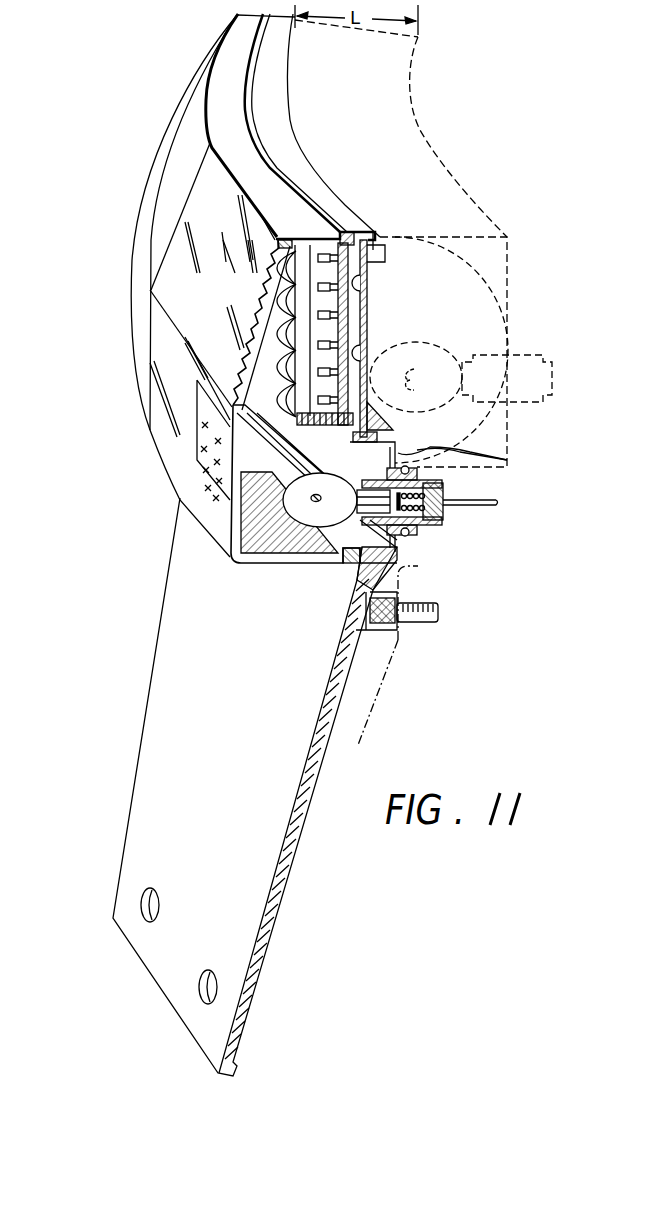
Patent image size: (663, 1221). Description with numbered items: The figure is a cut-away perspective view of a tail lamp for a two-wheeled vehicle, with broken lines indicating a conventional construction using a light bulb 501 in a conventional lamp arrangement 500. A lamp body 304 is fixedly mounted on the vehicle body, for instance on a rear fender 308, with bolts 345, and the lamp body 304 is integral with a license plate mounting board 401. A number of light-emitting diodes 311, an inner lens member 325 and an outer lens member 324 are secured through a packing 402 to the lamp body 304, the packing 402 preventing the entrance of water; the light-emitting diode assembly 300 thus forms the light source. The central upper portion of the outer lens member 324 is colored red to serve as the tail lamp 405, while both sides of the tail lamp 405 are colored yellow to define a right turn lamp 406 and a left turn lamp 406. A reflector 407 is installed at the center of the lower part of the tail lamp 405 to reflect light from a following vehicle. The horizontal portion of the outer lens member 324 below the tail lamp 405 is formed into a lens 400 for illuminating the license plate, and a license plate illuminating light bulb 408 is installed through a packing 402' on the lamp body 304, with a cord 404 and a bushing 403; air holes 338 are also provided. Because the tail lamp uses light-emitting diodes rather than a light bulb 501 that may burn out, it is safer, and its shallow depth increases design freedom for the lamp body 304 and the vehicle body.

The circuit board with LEDs 300 is at (368, 301).
The lamp body 304 is at (385, 248).
The rear fender 308 is at (370, 730).
The light-emitting diodes 311 is at (325, 237).
The outer lens member 324 is at (278, 168).
The inner lens member 325 is at (300, 237).
The air holes 338 is at (365, 287).
The bolts 345 is at (438, 614).
The lens 400 is at (315, 562).
The license plate mounting board 401 is at (152, 786).
The packing 402 is at (423, 322).
The packing 402' is at (494, 459).
The bushing 403 is at (450, 517).
The cord 404 is at (492, 501).
The tail lamp 405 is at (175, 295).
The turn lamp 406 is at (187, 153).
The reflector 407 is at (192, 453).
The license plate illuminating light bulb 408 is at (338, 528).
The lamp outline 500 is at (472, 301).
The light bulb 501 is at (453, 347).